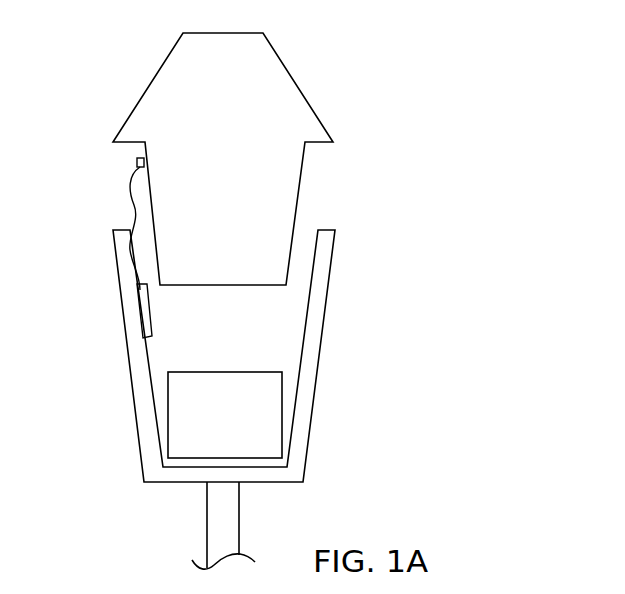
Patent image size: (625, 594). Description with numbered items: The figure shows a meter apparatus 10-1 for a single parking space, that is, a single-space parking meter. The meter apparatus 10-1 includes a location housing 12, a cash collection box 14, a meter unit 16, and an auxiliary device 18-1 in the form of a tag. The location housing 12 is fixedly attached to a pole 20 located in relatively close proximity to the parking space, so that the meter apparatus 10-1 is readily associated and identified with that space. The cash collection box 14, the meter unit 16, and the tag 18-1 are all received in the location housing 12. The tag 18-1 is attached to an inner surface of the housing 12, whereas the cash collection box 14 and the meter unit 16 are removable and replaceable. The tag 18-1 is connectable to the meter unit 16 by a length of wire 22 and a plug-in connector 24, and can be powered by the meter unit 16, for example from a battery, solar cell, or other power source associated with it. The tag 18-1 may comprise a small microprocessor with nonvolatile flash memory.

The meter apparatus 10-1 is at (478, 84).
The location housing 12 is at (327, 292).
The cash collection box 14 is at (283, 418).
The meter unit 16 is at (280, 62).
The auxiliary device 18-1 is at (138, 314).
The pole 20 is at (239, 522).
The wire 22 is at (130, 220).
The plug-in connector 24 is at (137, 162).